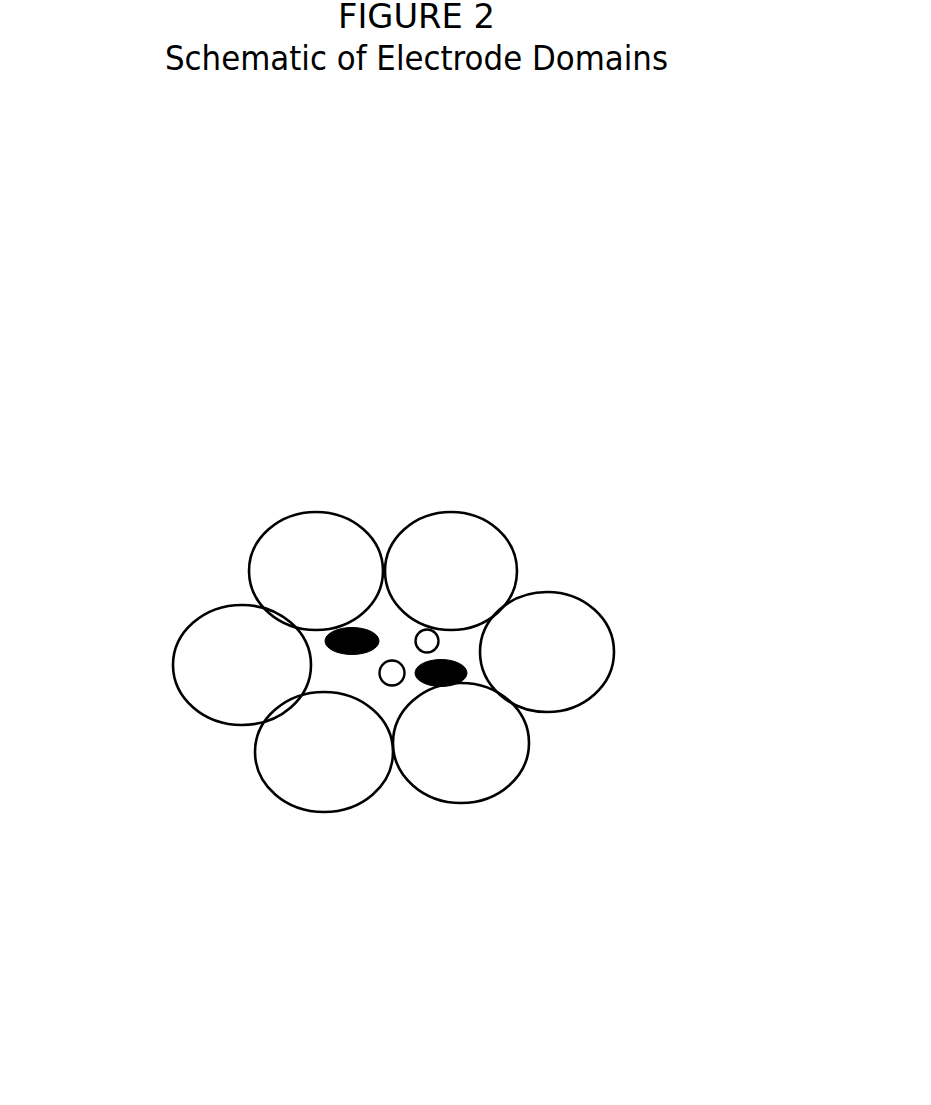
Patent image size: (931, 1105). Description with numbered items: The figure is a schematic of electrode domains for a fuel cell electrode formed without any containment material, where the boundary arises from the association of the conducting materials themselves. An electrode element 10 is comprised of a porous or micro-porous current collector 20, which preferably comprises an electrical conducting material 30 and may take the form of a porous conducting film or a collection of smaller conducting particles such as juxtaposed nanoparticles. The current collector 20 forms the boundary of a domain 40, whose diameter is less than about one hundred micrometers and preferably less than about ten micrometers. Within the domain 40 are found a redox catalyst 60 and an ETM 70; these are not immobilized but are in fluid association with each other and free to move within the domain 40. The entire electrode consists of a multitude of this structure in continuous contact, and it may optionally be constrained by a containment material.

The electrode element 10 is at (623, 832).
The current collector 20 is at (658, 602).
The electrical conducting material 30 is at (494, 548).
The domain 40 is at (478, 652).
The redox catalyst 60 is at (320, 632).
The ETM 70 is at (362, 676).